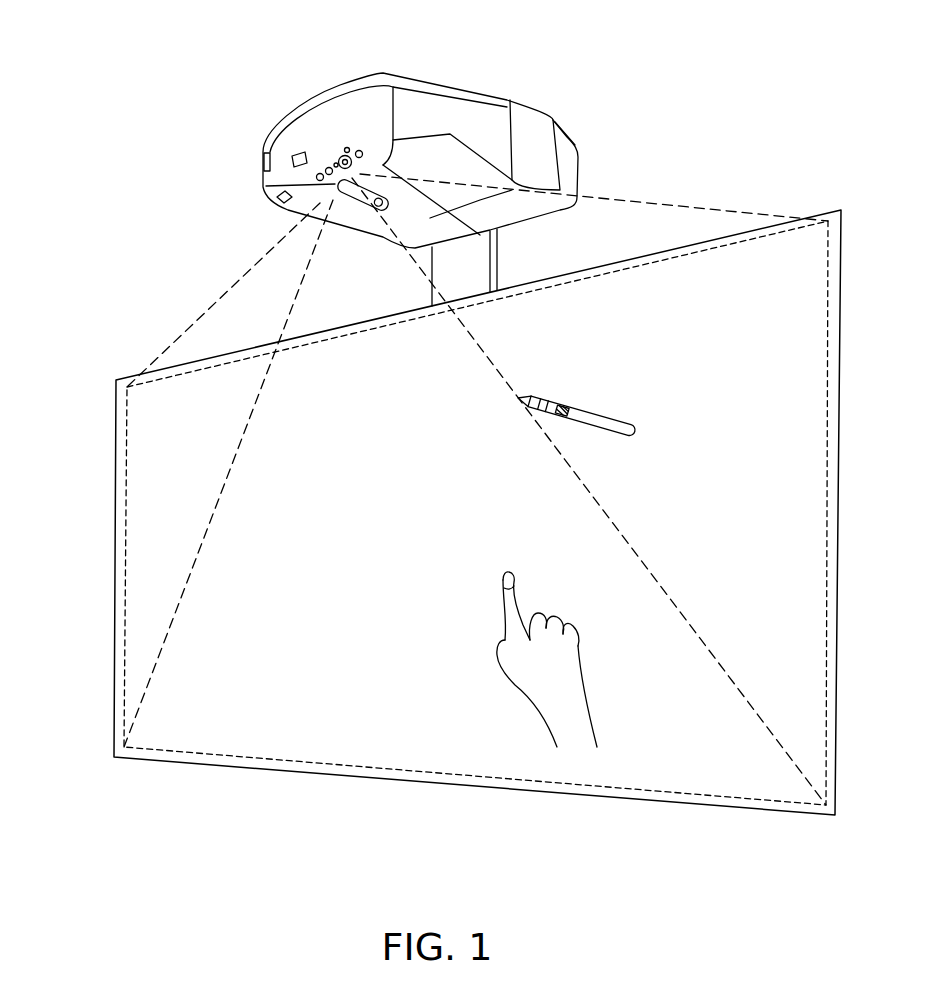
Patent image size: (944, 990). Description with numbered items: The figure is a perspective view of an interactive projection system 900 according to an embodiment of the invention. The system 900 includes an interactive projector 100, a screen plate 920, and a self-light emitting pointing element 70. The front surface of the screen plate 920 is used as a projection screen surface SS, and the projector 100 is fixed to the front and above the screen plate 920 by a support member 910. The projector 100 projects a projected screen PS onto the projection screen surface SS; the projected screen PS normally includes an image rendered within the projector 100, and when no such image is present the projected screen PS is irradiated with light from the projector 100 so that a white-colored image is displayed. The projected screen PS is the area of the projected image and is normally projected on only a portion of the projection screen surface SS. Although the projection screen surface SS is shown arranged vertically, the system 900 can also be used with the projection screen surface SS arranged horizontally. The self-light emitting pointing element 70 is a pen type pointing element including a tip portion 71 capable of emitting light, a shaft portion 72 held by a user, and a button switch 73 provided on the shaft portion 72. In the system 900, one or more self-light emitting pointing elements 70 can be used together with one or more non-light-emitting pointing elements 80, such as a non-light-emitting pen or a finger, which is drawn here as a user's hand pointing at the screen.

The interactive projection system 900 is at (152, 123).
The interactive projector 100 is at (455, 88).
The support member 910 is at (498, 262).
The screen plate 920 is at (824, 208).
The projected screen PS is at (116, 437).
The projection screen surface SS is at (117, 570).
The self-light emitting pointing element 70 is at (598, 410).
The tip portion 71 is at (520, 396).
The shaft portion 72 is at (615, 440).
The button switch 73 is at (560, 418).
The non-light-emitting pointing element 80 is at (500, 595).